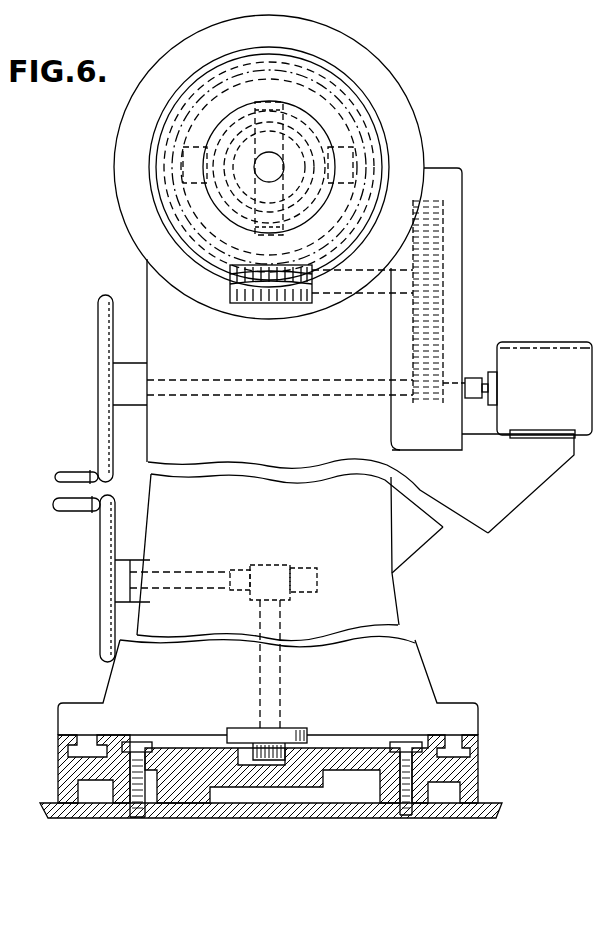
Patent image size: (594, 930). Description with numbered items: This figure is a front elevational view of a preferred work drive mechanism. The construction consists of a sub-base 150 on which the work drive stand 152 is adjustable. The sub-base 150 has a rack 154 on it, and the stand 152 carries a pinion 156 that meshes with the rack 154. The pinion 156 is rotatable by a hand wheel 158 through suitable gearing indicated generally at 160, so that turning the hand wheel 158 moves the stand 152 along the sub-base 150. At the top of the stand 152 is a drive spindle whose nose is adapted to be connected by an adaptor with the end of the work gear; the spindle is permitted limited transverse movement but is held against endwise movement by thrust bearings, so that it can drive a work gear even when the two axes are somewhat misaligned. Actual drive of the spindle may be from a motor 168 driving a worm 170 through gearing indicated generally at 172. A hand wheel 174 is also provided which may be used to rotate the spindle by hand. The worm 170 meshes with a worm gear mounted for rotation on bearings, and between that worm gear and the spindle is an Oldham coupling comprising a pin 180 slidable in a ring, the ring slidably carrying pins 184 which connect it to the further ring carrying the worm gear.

The sub-base 150 is at (477, 787).
The work drive stand 152 is at (423, 677).
The rack 154 is at (272, 779).
The pinion 156 is at (290, 752).
The hand wheel 158 is at (100, 542).
The gearing 160 is at (304, 558).
The motor 168 is at (538, 352).
The worm 170 is at (247, 303).
The gearing 172 is at (440, 340).
The hand wheel 174 is at (98, 352).
The pin 180 is at (297, 113).
The pins 184 is at (343, 150).